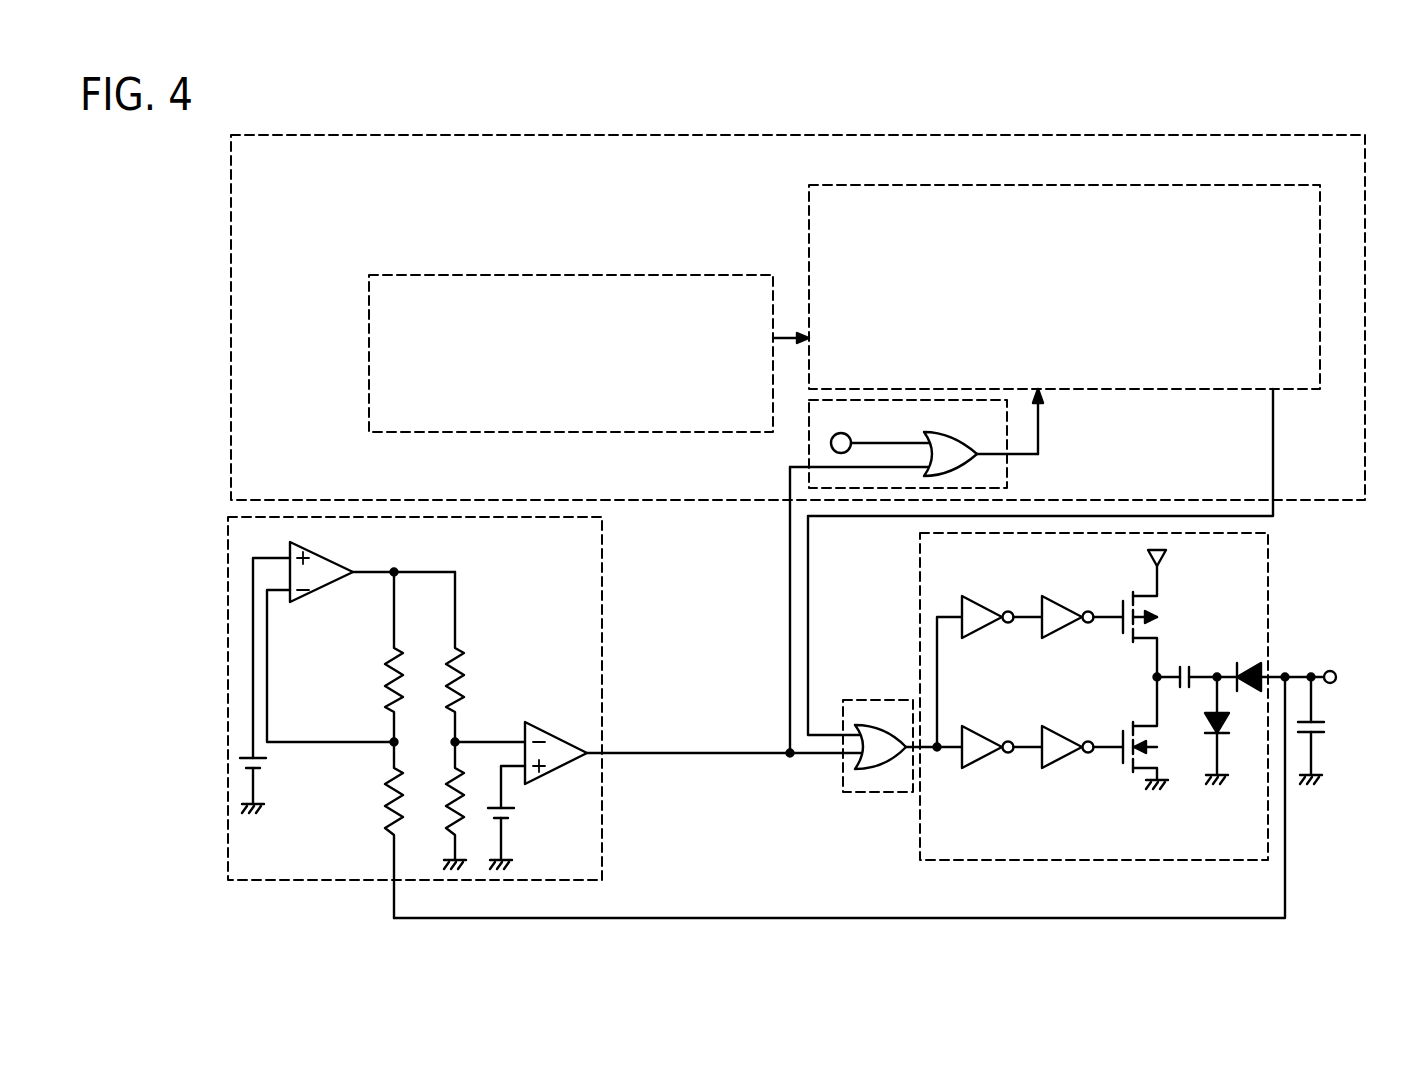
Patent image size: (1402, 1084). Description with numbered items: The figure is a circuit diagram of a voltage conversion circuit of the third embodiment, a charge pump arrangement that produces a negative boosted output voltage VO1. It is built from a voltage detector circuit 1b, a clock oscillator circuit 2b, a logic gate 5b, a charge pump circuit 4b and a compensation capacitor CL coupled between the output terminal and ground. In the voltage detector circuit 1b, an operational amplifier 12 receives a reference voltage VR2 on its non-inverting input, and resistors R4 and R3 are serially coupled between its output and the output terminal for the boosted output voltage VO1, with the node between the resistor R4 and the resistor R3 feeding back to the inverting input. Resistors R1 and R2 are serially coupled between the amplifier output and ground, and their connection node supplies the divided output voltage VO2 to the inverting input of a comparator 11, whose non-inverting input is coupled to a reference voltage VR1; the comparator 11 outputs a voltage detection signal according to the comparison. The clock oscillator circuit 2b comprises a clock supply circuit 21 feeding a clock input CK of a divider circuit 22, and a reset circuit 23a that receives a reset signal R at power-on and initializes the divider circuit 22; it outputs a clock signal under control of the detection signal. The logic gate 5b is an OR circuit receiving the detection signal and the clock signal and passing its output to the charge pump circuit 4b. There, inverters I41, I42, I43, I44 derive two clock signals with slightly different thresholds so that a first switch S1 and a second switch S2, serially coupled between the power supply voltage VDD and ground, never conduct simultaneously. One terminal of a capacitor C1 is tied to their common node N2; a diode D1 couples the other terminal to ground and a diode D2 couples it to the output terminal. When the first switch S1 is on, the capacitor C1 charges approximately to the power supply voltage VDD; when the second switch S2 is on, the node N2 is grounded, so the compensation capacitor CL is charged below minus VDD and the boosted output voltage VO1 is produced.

The clock oscillator circuit 2b is at (437, 135).
The clock supply circuit 21 is at (411, 275).
The divider circuit 22 is at (809, 210).
The reset circuit 23a is at (1010, 476).
The voltage detector circuit 1b is at (603, 612).
The operational amplifier 12 is at (320, 546).
The comparator 11 is at (555, 722).
The logic gate 5b is at (842, 784).
The charge pump circuit 4b is at (1020, 860).
The resistor R1 is at (455, 805).
The resistor R2 is at (462, 660).
The resistor R3 is at (392, 790).
The resistor R4 is at (375, 659).
The reference voltage source VR1 is at (530, 838).
The reference voltage source VR2 is at (270, 762).
The divided output voltage VO2 is at (490, 725).
The boosted output voltage VO1 is at (1330, 671).
The clock input CK is at (837, 336).
The reset signal R is at (1039, 403).
The inverter I41 is at (975, 598).
The inverter I42 is at (1060, 598).
The inverter I43 is at (980, 769).
The inverter I44 is at (1060, 769).
The first switch S1 is at (1121, 602).
The second switch S2 is at (1122, 769).
The power supply voltage VDD is at (1180, 555).
The node N2 is at (1149, 680).
The capacitor C1 is at (1186, 662).
The diode D1 is at (1233, 730).
The diode D2 is at (1278, 664).
The compensation capacitor CL is at (1324, 727).